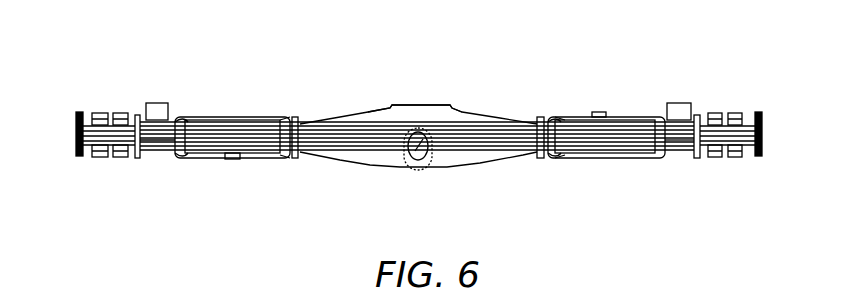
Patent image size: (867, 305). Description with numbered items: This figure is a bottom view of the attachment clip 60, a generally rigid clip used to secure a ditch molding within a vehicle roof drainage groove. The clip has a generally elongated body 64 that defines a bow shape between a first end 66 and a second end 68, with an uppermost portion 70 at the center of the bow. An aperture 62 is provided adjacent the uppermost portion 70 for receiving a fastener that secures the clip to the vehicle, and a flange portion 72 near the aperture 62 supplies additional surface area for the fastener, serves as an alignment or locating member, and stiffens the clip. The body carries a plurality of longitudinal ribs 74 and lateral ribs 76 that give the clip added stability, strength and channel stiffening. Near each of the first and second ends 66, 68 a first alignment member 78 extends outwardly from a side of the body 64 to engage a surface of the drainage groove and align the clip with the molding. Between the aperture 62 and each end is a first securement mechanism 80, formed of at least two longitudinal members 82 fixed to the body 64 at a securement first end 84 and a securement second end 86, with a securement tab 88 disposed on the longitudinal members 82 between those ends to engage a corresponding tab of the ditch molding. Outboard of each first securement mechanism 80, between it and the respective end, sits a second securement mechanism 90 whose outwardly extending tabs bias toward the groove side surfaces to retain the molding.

The attachment clip 60 is at (643, 75).
The aperture 62 is at (432, 136).
The elongated body 64 is at (640, 157).
The first end 66 is at (76, 138).
The second end 68 is at (765, 138).
The uppermost portion 70 is at (417, 106).
The flange portion 72 is at (380, 164).
The longitudinal ribs 74 is at (178, 150).
The lateral ribs 76 is at (78, 113).
The first alignment member 78 is at (158, 103).
The first securement mechanism 80 is at (210, 118).
The longitudinal members 82 is at (260, 118).
The securement first end 84 is at (180, 118).
The securement second end 86 is at (293, 117).
The securement tab 88 is at (237, 117).
The second securement mechanism 90 is at (101, 158).